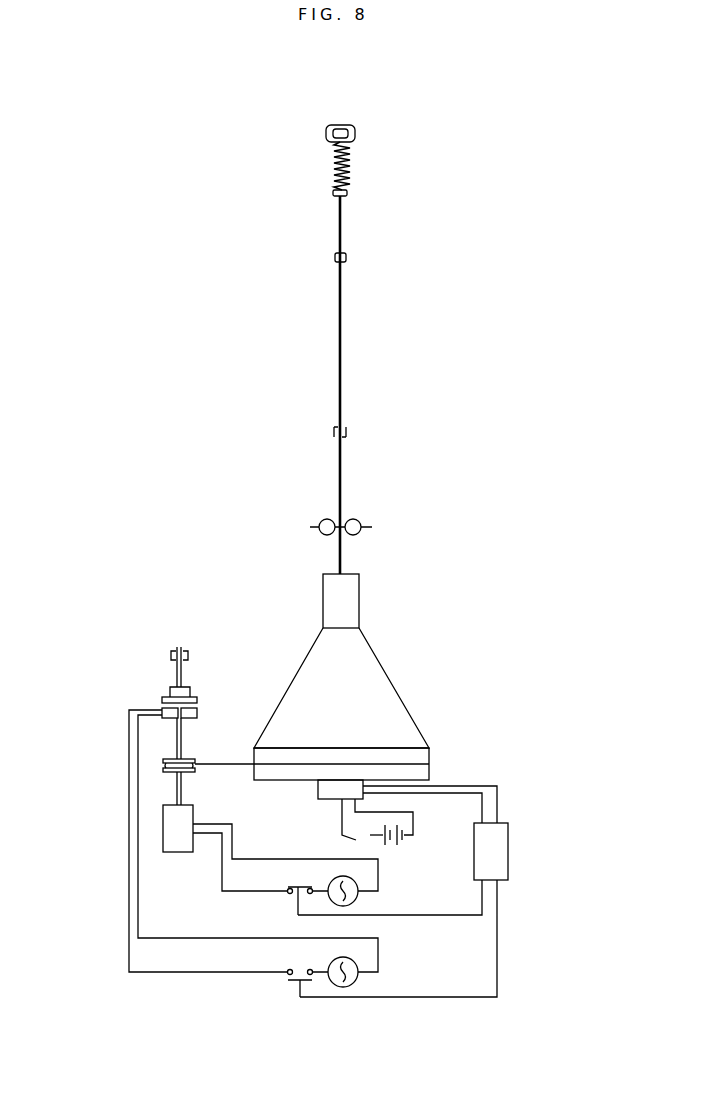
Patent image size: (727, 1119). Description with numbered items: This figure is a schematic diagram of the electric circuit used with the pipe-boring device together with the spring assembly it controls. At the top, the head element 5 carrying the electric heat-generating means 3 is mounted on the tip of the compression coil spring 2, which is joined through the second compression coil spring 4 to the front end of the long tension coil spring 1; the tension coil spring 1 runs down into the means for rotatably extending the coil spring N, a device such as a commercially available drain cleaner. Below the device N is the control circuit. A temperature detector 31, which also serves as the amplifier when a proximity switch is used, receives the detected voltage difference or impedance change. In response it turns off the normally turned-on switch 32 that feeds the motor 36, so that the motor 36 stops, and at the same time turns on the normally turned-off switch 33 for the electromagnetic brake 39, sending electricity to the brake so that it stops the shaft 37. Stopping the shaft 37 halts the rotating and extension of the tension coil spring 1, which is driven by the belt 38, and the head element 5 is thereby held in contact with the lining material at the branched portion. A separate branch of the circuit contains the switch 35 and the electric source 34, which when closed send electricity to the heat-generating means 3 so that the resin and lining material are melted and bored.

The tension coil spring 1 is at (342, 353).
The compression coil spring 2 is at (346, 156).
The electric heat-generating means 3 is at (339, 127).
The compression coil spring 4 is at (343, 230).
The head element 5 is at (365, 113).
The temperature detector 31 is at (498, 850).
The switch 32 is at (293, 897).
The switch 33 is at (291, 985).
The electric source 34 is at (404, 841).
The switch 35 is at (352, 840).
The motor 36 is at (183, 846).
The shaft 37 is at (185, 742).
The belt 38 is at (228, 766).
The electromagnetic brake 39 is at (160, 699).
The means for rotatably extending the coil spring N is at (419, 667).